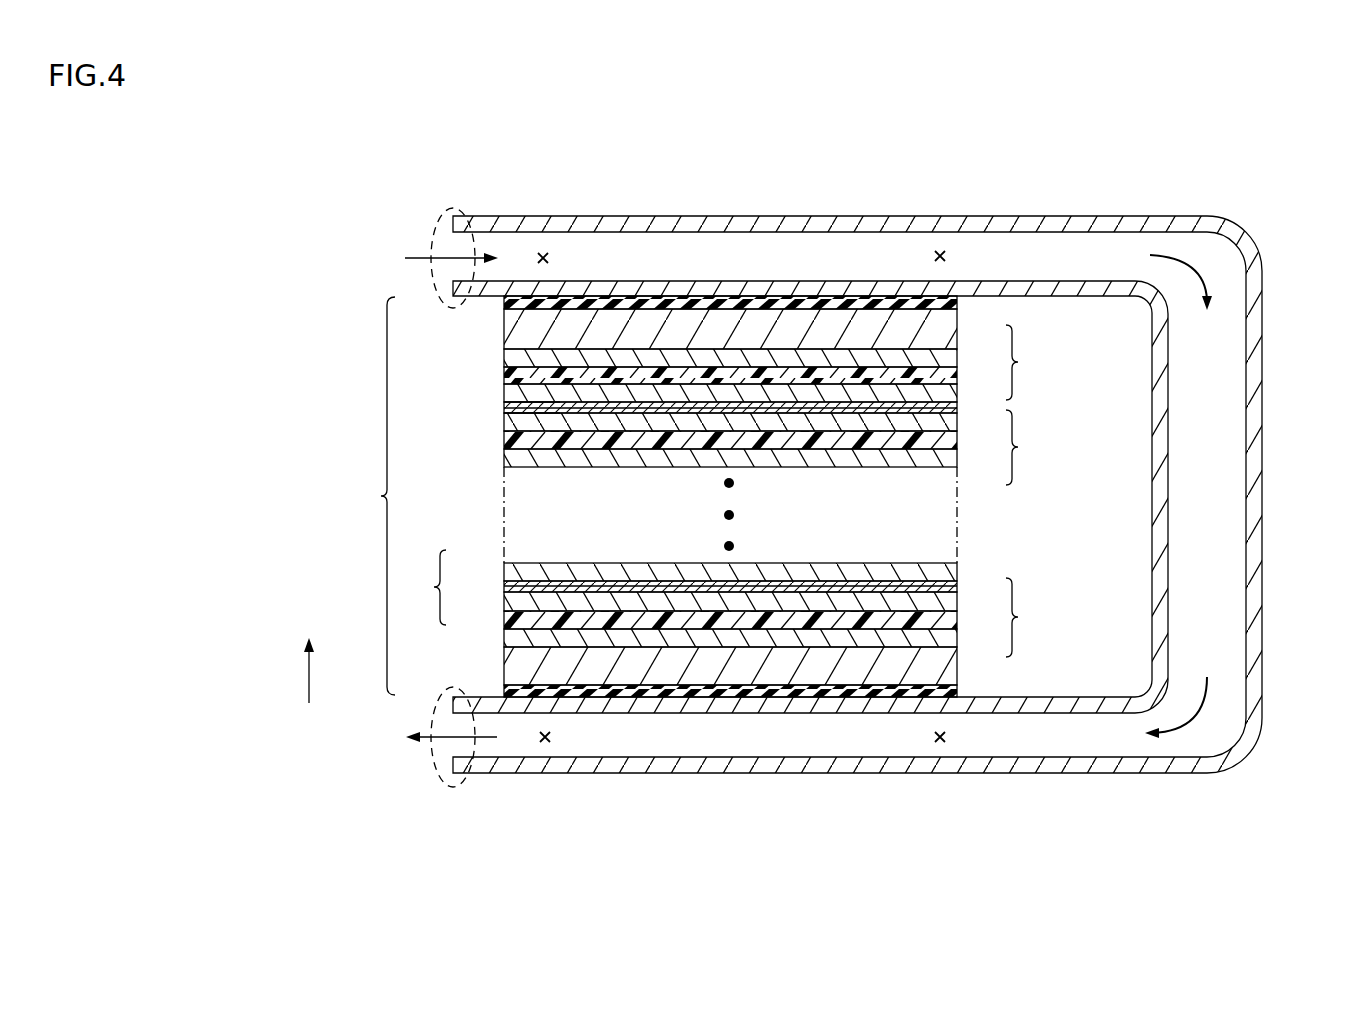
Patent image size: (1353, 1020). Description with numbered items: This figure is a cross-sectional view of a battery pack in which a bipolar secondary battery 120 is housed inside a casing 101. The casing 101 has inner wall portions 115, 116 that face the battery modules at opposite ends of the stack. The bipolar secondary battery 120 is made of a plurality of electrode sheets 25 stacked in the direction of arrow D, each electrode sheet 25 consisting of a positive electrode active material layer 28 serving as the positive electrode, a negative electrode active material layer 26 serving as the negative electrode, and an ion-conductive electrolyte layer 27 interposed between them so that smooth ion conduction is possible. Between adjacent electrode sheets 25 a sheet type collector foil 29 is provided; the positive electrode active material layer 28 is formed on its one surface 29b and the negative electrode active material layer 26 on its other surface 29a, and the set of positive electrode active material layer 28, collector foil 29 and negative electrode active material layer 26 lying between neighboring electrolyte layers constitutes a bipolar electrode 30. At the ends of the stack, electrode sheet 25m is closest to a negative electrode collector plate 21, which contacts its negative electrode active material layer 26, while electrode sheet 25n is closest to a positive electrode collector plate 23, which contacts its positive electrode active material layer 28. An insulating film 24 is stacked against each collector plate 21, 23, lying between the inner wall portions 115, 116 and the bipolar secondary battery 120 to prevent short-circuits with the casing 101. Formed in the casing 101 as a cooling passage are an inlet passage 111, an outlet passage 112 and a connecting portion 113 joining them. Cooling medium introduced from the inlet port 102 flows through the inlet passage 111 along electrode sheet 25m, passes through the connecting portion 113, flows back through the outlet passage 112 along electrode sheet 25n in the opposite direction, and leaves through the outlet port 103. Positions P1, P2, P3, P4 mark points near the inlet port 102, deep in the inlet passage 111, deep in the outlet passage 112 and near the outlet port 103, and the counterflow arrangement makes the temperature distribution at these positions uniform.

The casing 101 is at (1113, 215).
The inlet port 102 is at (450, 207).
The outlet port 103 is at (453, 788).
The inlet passage 111 is at (841, 250).
The outlet passage 112 is at (640, 740).
The connecting portion 113 is at (1220, 383).
The inner wall portion 115 is at (1093, 296).
The inner wall portion 116 is at (1097, 694).
The bipolar secondary battery 120 is at (647, 496).
The negative electrode collector plate 21 is at (920, 327).
The positive electrode collector plate 23 is at (920, 665).
The insulating film 24 is at (515, 303).
The electrode sheet 25 is at (1029, 447).
The electrode sheet 25m is at (1038, 362).
The electrode sheet 25n is at (1035, 617).
The negative electrode active material layer 26 is at (925, 356).
The electrolyte layer 27 is at (925, 375).
The positive electrode active material layer 28 is at (925, 394).
The collector foil 29 is at (512, 408).
The other surface 29a is at (518, 437).
The one surface 29b is at (520, 383).
The bipolar electrode 30 is at (425, 587).
The position P1 is at (543, 250).
The position P2 is at (940, 248).
The position P3 is at (942, 745).
The position P4 is at (546, 745).
The arrow D is at (299, 670).